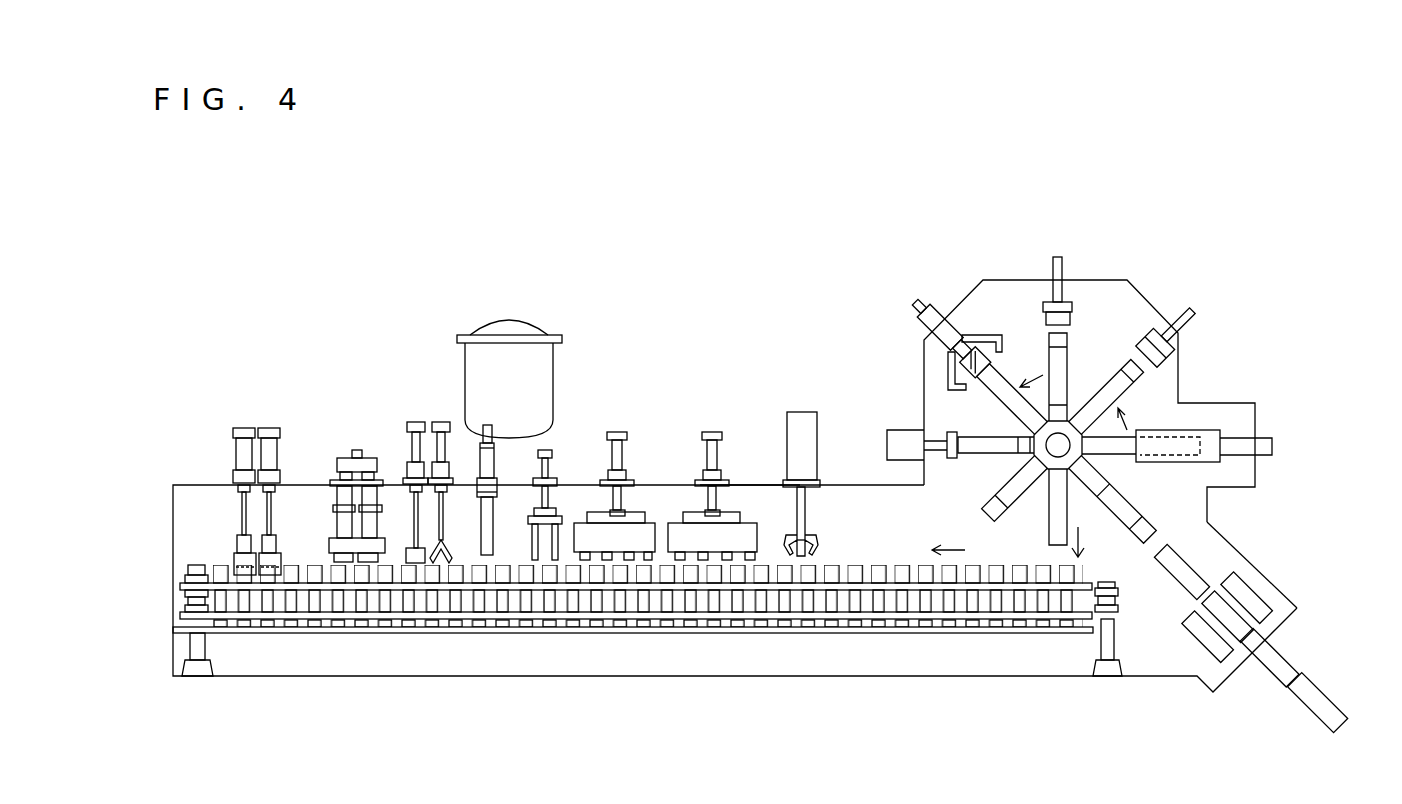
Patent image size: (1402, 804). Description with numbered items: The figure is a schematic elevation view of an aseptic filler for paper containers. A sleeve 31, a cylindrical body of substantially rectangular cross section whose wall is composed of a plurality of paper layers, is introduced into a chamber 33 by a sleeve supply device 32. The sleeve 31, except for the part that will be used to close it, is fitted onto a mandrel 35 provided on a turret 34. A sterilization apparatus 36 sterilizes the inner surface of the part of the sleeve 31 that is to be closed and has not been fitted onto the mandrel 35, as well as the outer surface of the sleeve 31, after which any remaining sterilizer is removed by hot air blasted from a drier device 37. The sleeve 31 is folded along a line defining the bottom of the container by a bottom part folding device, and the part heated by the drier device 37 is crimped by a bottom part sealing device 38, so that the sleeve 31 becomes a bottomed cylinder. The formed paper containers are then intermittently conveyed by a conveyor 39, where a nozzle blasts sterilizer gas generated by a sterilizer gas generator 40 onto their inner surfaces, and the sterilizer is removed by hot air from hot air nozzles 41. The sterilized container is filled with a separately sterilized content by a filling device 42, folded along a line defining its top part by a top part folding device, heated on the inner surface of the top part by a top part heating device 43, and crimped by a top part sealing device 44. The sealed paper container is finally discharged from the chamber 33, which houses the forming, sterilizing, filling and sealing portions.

The sleeve 31 is at (1150, 516).
The sleeve supply device 32 is at (1307, 624).
The chamber 33 is at (748, 472).
The turret 34 is at (1040, 452).
The mandrel 35 is at (1115, 447).
The sterilization apparatus 36 is at (1210, 430).
The drier device 37 is at (1073, 318).
The bottom part sealing device 38 is at (950, 432).
The conveyor 39 is at (1088, 633).
The sterilizer gas generator 40 is at (812, 386).
The hot air nozzles 41 is at (757, 557).
The filling device 42 is at (493, 520).
The top part heating device 43 is at (330, 540).
The top part sealing device 44 is at (237, 538).